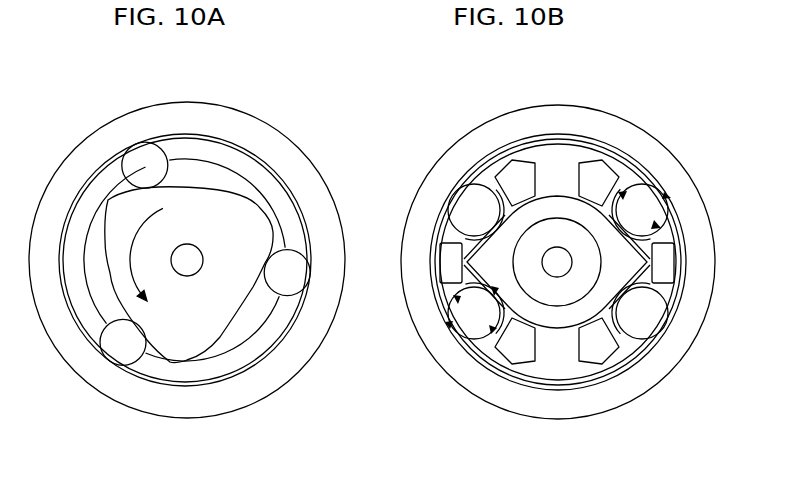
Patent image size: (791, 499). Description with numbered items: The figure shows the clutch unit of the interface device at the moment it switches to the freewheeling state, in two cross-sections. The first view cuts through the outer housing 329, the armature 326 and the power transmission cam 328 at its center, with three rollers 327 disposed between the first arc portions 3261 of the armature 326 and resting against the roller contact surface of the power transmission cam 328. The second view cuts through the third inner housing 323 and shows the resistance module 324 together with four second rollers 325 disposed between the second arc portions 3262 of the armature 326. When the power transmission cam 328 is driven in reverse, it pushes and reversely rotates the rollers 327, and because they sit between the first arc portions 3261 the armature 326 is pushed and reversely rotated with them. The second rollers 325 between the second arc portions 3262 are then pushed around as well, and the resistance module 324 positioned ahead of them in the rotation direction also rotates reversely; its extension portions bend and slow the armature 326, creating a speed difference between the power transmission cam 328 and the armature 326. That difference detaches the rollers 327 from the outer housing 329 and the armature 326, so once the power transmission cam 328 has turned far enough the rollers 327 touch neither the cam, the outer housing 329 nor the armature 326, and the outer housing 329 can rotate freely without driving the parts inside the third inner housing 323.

In FIG. 10B, the third inner housing 323 is at (698, 265).
In FIG. 10B, the resistance module 324 is at (575, 157).
In FIG. 10B, the second rollers 325 is at (662, 184).
In FIG. 10A, the armature 326 is at (212, 173).
In FIG. 10A, the first arc portions 3261 is at (272, 187).
In FIG. 10B, the second arc portions 3262 is at (428, 280).
In FIG. 10A, the rollers 327 is at (110, 345).
In FIG. 10A, the power transmission cam 328 is at (222, 302).
In FIG. 10A, the outer housing 329 is at (267, 147).